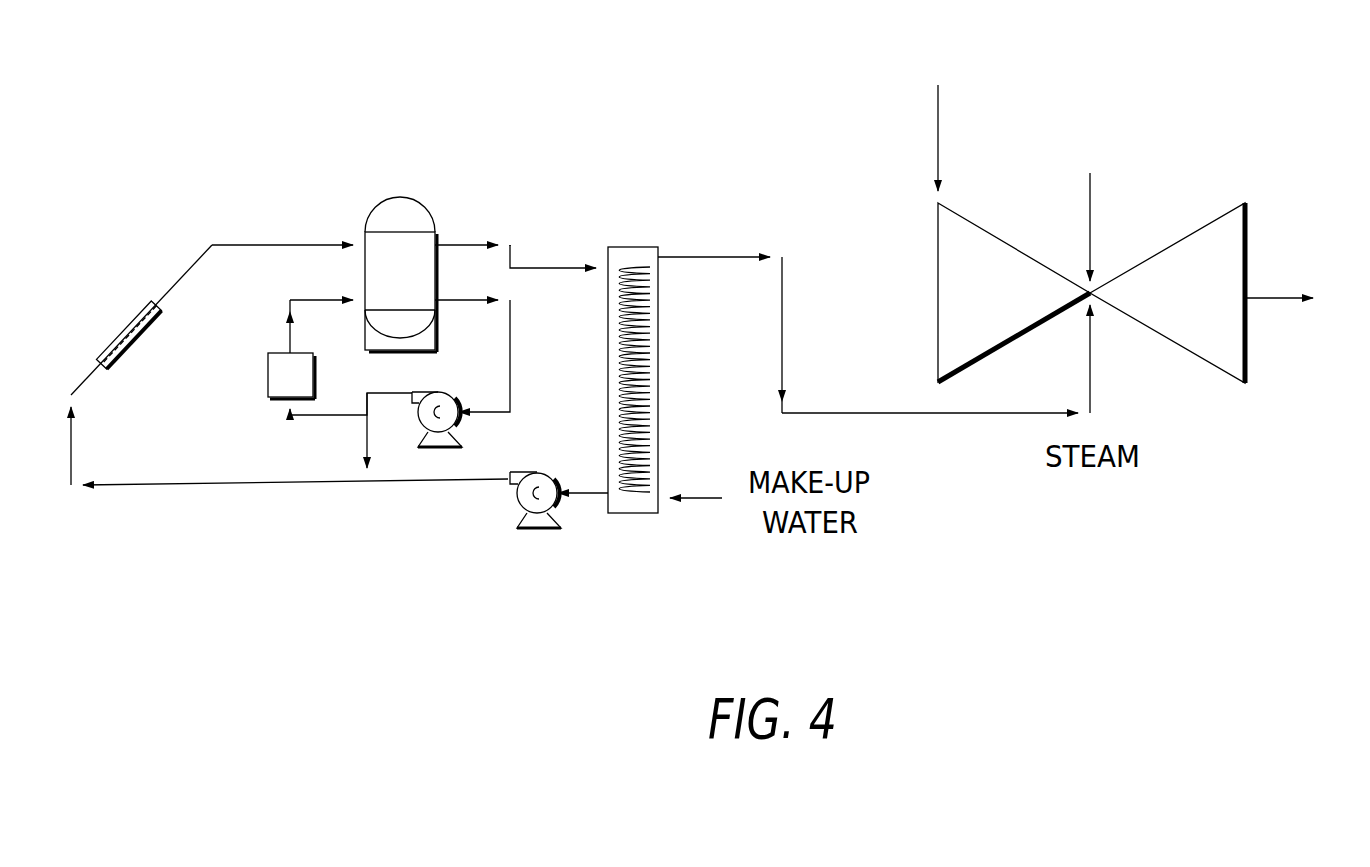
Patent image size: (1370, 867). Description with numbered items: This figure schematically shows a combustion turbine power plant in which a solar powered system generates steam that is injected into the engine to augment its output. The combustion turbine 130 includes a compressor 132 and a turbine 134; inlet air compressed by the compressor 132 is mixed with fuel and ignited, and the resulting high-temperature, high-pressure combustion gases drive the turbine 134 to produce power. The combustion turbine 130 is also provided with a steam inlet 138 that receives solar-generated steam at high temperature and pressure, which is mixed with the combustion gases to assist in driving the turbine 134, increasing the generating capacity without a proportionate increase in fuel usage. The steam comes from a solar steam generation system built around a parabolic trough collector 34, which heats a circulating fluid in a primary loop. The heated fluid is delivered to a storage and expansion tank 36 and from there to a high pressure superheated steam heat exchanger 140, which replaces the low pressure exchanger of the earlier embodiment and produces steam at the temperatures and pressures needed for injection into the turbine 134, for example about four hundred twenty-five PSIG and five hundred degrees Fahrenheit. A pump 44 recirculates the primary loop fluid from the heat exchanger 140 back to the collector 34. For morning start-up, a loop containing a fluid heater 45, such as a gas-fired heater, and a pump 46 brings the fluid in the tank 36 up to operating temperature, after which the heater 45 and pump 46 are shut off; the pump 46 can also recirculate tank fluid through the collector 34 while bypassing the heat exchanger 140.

The parabolic trough collector 34 is at (122, 331).
The storage and expansion tank 36 is at (365, 268).
The pump 44 is at (513, 503).
The fluid heater 45 is at (268, 370).
The pump 46 is at (455, 433).
The combustion turbine 130 is at (1100, 269).
The compressor 132 is at (938, 278).
The turbine 134 is at (1245, 335).
The steam inlet 138 is at (1090, 347).
The high pressure superheated steam heat exchanger 140 is at (630, 246).